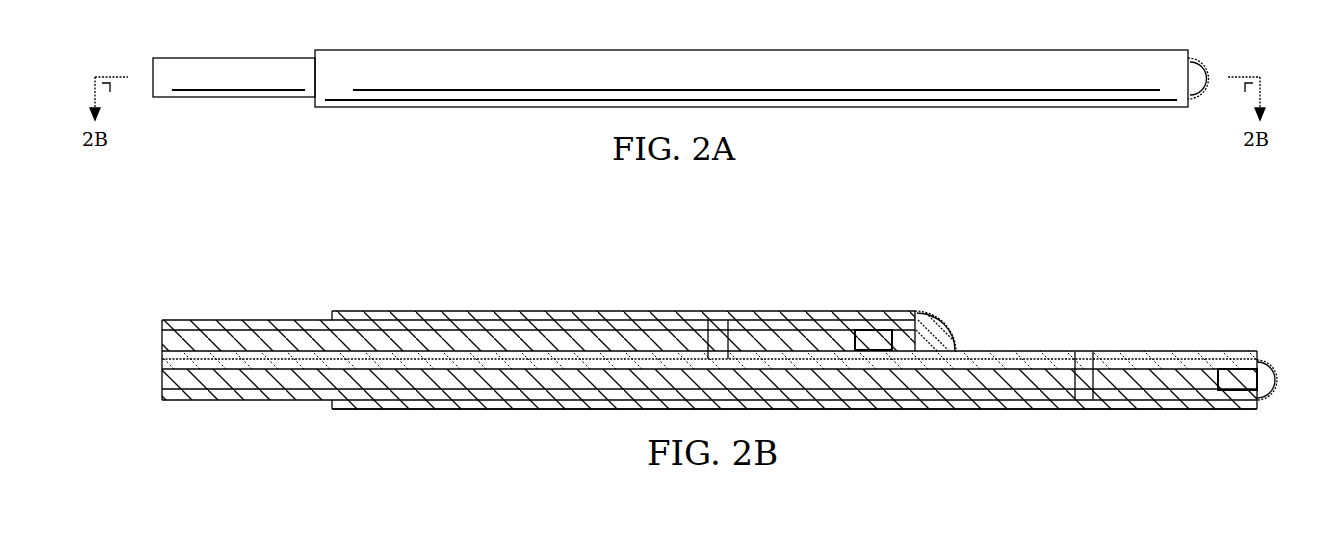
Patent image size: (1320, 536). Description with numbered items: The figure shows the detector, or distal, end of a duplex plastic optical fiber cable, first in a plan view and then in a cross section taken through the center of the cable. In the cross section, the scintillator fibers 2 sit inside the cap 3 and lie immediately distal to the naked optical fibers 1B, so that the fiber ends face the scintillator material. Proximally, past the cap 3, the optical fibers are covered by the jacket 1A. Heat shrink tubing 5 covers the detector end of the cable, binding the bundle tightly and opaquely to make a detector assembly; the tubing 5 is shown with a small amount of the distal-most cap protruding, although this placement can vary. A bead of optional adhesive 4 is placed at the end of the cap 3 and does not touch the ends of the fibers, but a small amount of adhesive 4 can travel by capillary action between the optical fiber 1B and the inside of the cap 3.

The jacket 1A is at (158, 322).
The naked optical fiber 1B is at (158, 340).
The scintillator fiber 2 is at (872, 332).
The cap 3 is at (911, 330).
The adhesive 4 is at (720, 320).
The heat shrink tubing 5 is at (921, 411).